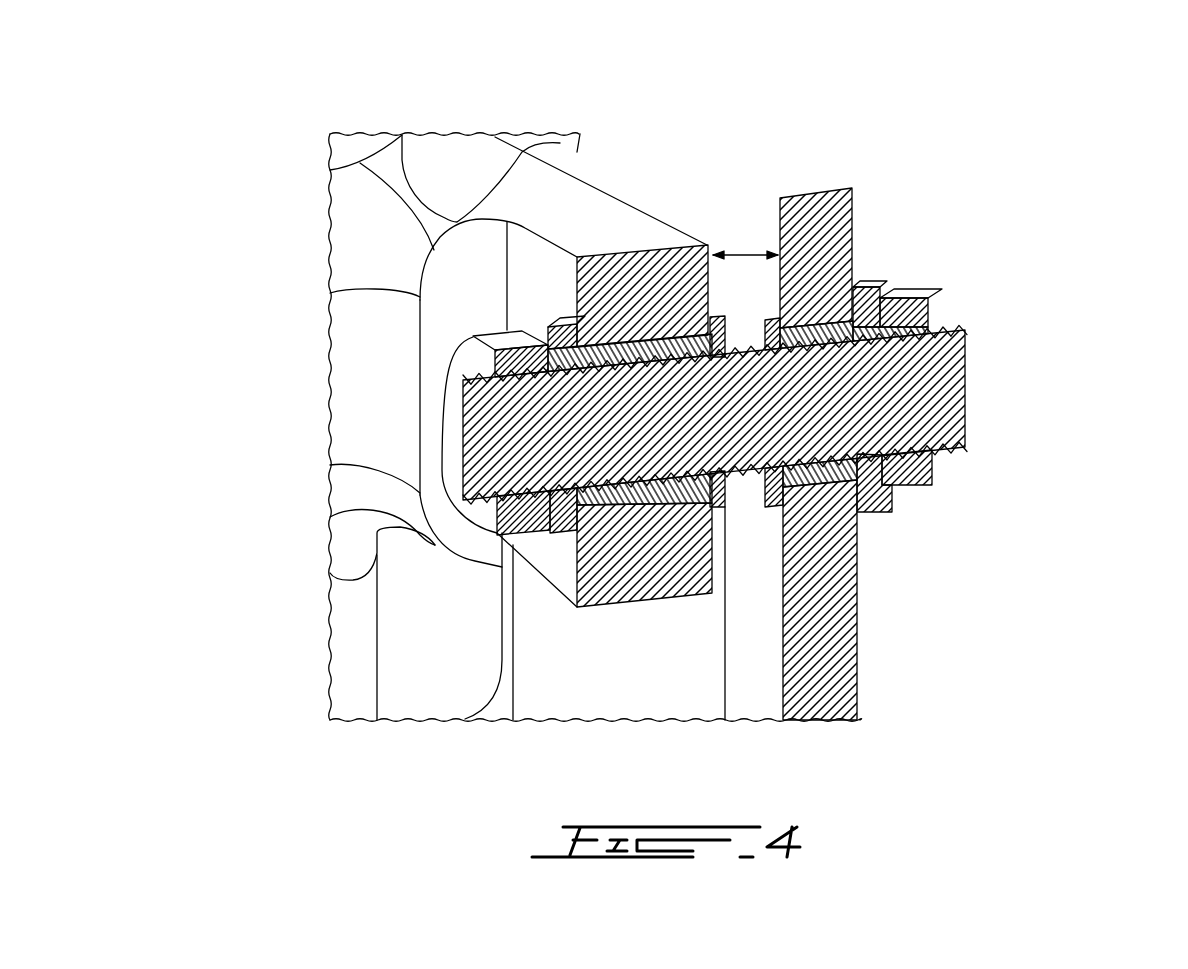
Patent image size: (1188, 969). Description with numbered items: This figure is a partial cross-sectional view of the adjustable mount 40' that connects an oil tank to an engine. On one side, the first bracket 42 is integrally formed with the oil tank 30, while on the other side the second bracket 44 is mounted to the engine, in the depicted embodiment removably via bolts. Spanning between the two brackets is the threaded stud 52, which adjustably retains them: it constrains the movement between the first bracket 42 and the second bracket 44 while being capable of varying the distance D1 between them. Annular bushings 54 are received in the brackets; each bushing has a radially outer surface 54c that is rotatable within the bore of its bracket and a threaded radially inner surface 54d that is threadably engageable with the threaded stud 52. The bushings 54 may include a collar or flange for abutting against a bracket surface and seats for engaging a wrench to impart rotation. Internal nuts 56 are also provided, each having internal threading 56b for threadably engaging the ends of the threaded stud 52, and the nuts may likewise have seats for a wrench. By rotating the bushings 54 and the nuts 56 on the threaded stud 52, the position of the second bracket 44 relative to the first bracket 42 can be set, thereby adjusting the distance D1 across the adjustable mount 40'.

The oil tank 30 is at (300, 146).
The adjustable mount 40' is at (1083, 94).
The first bracket 42 is at (548, 207).
The second bracket 44 is at (835, 645).
The threaded stud 52 is at (487, 447).
The bushings 54 is at (655, 353).
The radially outer surface 54c is at (812, 323).
The threaded radially inner surface 54d is at (880, 289).
The nuts 56 is at (478, 358).
The internal threading 56b is at (885, 480).
The distance D1 is at (717, 318).